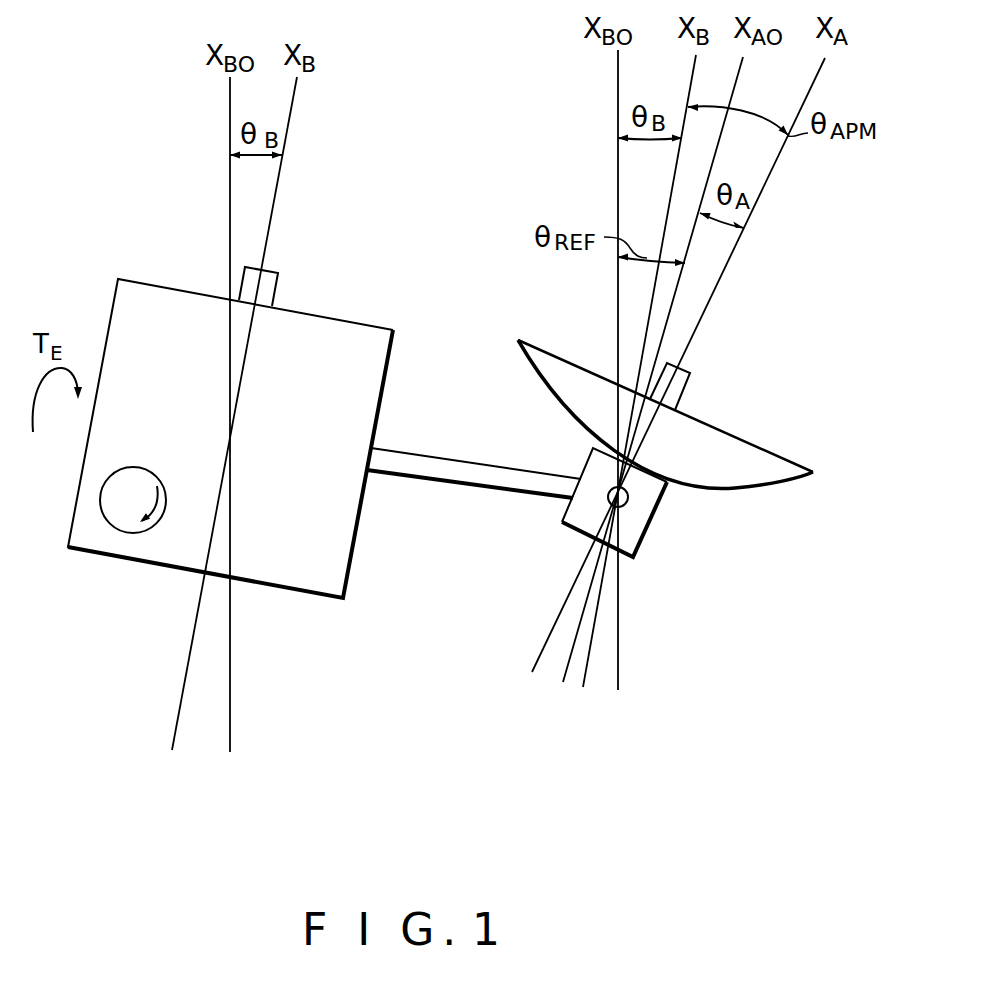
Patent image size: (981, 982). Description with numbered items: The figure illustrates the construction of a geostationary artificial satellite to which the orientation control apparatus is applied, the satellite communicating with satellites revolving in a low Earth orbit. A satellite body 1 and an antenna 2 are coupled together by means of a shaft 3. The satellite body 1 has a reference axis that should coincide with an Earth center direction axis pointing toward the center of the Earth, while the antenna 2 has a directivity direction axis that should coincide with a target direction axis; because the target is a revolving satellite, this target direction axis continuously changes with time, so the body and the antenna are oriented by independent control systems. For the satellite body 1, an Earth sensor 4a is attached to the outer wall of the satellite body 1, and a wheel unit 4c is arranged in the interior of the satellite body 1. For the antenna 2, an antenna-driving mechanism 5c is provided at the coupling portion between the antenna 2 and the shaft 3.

The satellite body 1 is at (380, 327).
The antenna 2 is at (768, 448).
The shaft 3 is at (465, 473).
The Earth sensor 4a is at (278, 281).
The wheel unit 4c is at (132, 533).
The antenna-driving mechanism 5c is at (628, 499).